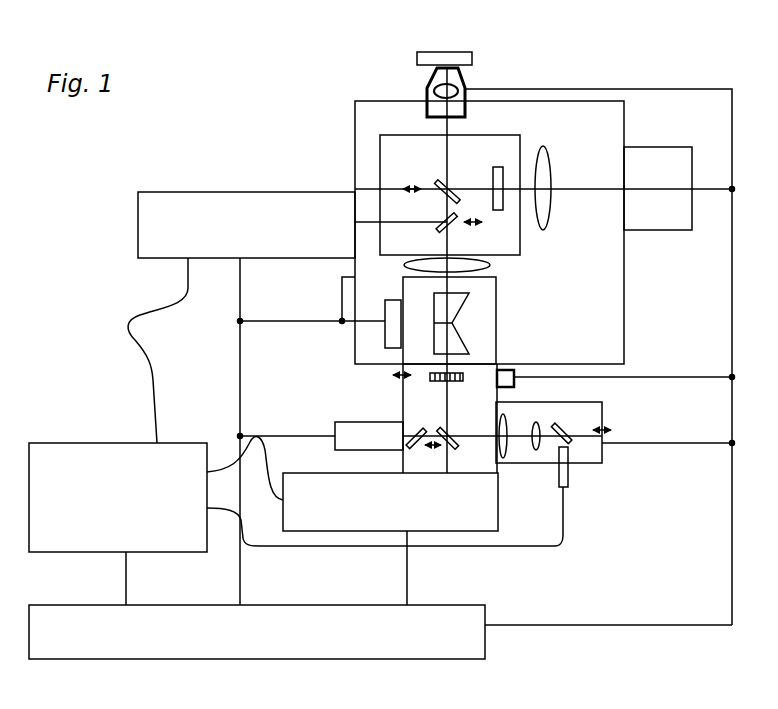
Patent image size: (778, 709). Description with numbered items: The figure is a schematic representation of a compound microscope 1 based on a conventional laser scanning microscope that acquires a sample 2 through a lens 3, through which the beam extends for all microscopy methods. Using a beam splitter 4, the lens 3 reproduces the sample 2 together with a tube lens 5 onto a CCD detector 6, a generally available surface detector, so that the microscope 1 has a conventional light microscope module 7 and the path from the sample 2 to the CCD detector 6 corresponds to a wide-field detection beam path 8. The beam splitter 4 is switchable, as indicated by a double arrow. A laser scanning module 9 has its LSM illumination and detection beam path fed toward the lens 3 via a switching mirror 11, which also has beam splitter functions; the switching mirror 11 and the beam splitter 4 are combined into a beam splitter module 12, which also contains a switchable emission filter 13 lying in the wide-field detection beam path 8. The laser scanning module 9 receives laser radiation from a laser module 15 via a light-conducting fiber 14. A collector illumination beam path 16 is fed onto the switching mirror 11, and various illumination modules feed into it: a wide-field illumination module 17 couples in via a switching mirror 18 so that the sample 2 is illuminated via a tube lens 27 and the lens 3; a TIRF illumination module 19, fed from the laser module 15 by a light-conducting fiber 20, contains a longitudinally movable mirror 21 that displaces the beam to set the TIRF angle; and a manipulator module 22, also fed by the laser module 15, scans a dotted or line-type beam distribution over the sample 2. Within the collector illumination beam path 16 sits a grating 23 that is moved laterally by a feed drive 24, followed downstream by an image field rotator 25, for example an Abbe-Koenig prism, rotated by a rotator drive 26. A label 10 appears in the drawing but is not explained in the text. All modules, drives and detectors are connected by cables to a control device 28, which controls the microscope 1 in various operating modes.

The microscope 1 is at (287, 80).
The sample 2 is at (417, 57).
The lens 3 is at (466, 82).
The beam splitter 4 is at (436, 197).
The tube lens 5 is at (552, 215).
The CCD detector 6 is at (645, 147).
The light microscope module 7 is at (353, 145).
The wide-field detection beam path 8 is at (556, 188).
The laser scanning module 9 is at (172, 192).
The illumination beam path 10 is at (367, 220).
The switching mirror 11 is at (432, 226).
The beam splitter module 12 is at (521, 245).
The emission filter 13 is at (490, 176).
The light-conducting fiber 14 is at (148, 377).
The laser module 15 is at (40, 440).
The collector illumination beam path 16 is at (447, 240).
The wide-field illumination module 17 is at (345, 420).
The switching mirror 18 is at (414, 432).
The TIRF illumination module 19 is at (587, 465).
The light-conducting fiber 20 is at (545, 542).
The mirror 21 is at (577, 440).
The manipulator module 22 is at (353, 532).
The grating 23 is at (450, 382).
The feed drive 24 is at (514, 385).
The image field rotator 25 is at (463, 340).
The rotator drive 26 is at (357, 343).
The tube lens 27 is at (353, 265).
The control device 28 is at (485, 659).